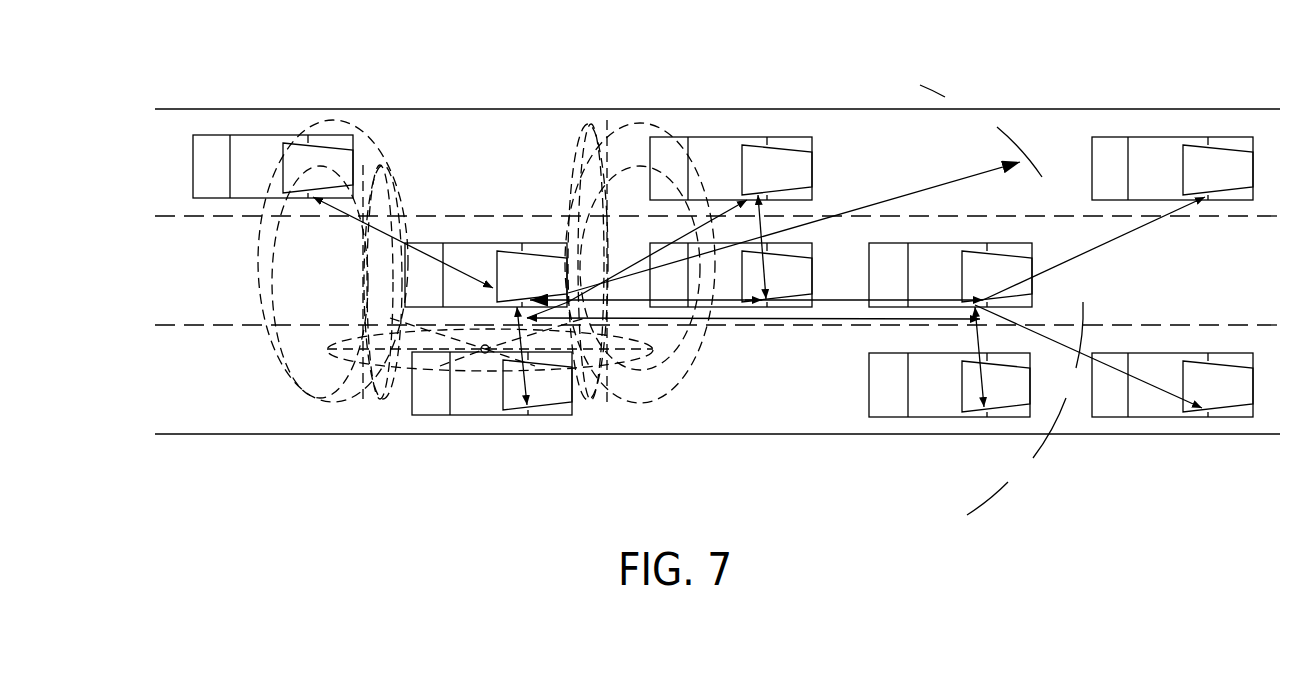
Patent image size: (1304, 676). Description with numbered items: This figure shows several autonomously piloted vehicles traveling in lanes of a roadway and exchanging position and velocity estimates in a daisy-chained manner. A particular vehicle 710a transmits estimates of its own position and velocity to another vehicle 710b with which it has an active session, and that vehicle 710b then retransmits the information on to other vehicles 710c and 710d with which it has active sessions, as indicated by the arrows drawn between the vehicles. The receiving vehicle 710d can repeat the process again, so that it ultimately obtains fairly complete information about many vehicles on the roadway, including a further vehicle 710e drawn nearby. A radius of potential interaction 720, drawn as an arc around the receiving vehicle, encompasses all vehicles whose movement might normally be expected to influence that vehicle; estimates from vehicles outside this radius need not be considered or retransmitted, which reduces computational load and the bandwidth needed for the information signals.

The vehicle 710a is at (1162, 168).
The vehicle 710b is at (935, 262).
The vehicle 710c is at (792, 278).
The vehicle 710d is at (473, 258).
The vehicle 710e is at (712, 172).
The radius of potential interaction 720 is at (950, 178).